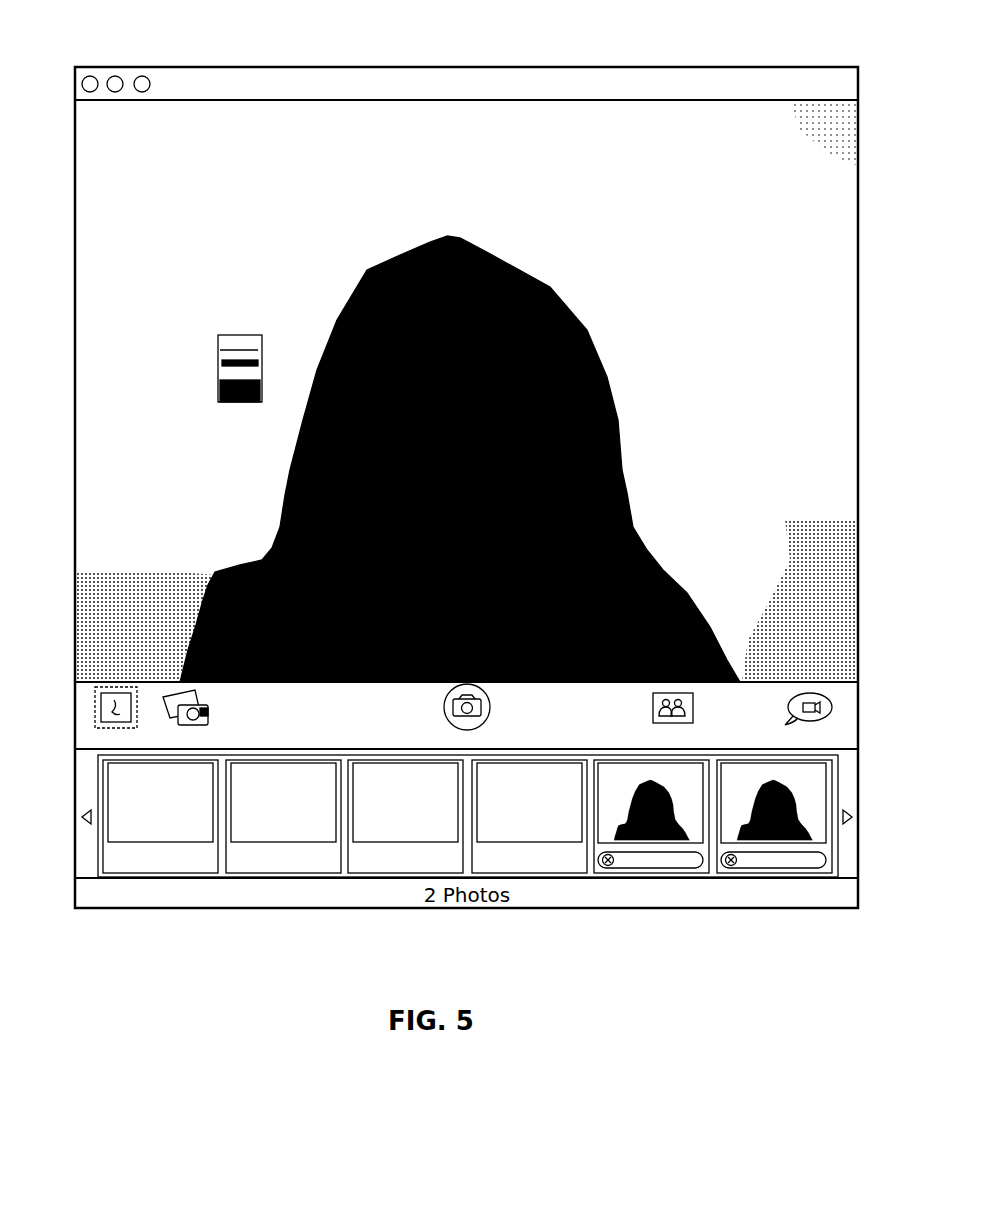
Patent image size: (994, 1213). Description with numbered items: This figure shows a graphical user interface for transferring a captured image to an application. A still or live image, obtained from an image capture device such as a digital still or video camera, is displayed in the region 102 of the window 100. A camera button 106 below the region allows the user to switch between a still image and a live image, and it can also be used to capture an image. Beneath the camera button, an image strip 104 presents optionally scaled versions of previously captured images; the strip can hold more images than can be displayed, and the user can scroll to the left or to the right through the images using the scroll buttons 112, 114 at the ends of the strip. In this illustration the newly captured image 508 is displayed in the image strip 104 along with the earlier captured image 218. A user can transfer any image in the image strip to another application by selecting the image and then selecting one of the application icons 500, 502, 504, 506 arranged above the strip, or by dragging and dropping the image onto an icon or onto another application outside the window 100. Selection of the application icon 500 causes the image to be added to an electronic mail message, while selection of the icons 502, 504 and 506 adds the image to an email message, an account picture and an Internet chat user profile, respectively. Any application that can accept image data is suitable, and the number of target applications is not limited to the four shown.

The window 100 is at (157, 55).
The region 102 is at (380, 686).
The image strip 104 is at (67, 755).
The camera button 106 is at (443, 709).
The scroll button 112 is at (845, 888).
The scroll button 114 is at (86, 890).
The previously captured image 218 is at (664, 888).
The application icon 500 is at (94, 706).
The application icon 502 is at (206, 703).
The application icon 504 is at (652, 700).
The application icon 506 is at (787, 702).
The newly captured image 508 is at (789, 888).